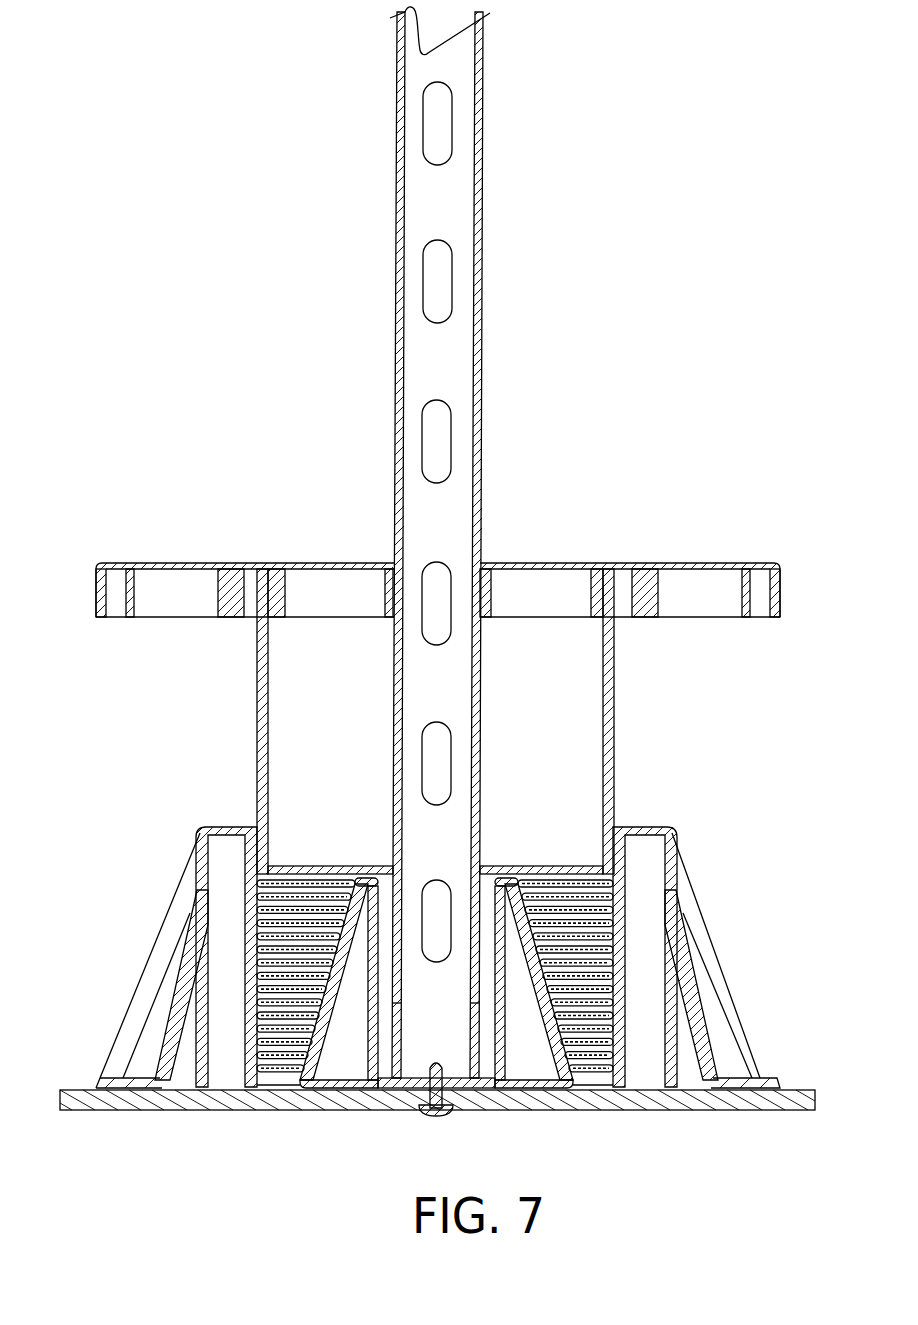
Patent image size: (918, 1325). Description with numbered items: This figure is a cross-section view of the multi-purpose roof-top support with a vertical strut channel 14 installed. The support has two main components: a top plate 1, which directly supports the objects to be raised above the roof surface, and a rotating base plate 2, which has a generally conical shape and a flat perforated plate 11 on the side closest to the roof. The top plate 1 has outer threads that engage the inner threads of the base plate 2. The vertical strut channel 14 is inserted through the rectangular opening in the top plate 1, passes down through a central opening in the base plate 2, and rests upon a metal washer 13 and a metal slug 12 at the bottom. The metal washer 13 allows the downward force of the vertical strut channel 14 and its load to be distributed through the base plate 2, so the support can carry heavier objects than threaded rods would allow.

The vertical strut channel 14 is at (480, 328).
The top plate 1 is at (811, 562).
The rotating base plate 2 is at (713, 983).
The flat perforated plate 11 is at (768, 1079).
The metal slug 12 is at (452, 1122).
The metal washer 13 is at (500, 1083).